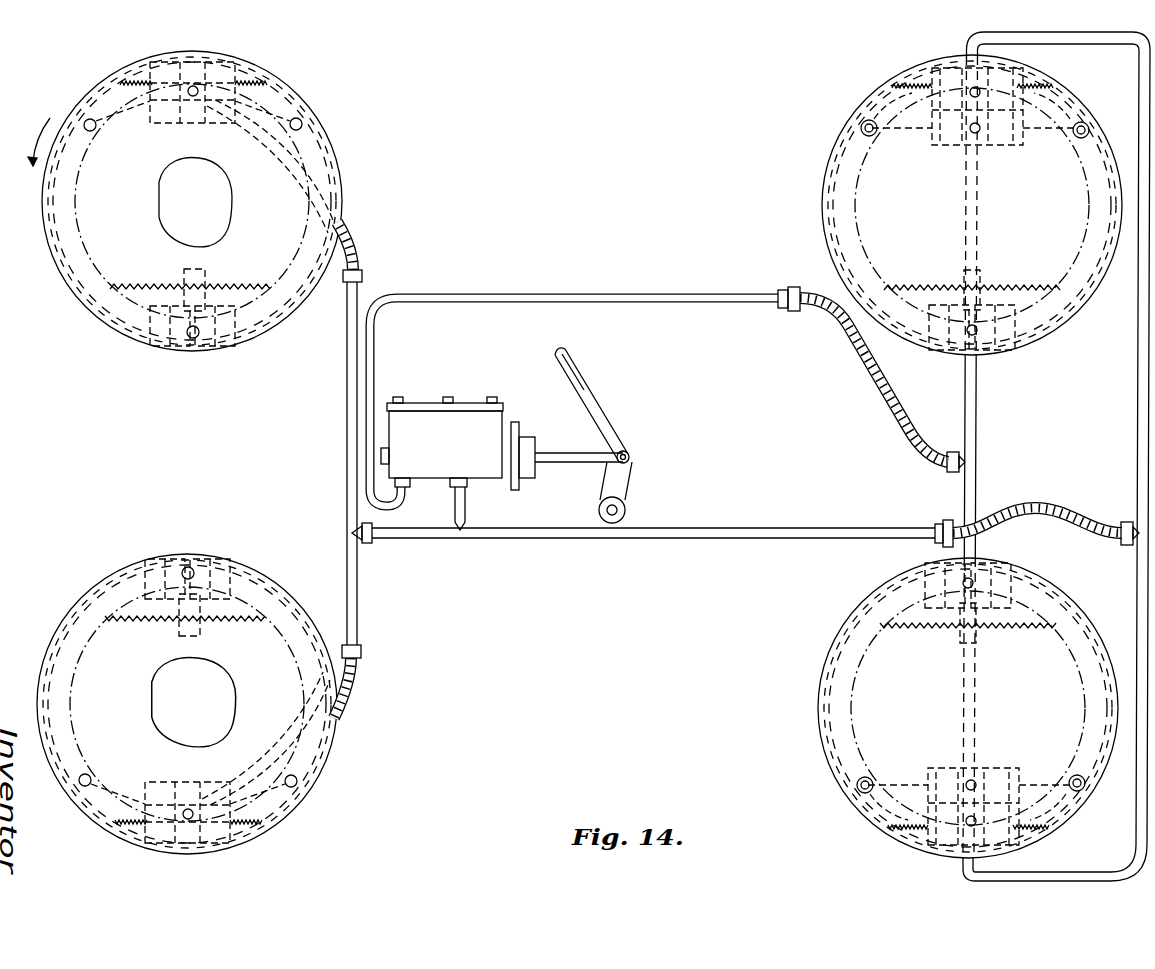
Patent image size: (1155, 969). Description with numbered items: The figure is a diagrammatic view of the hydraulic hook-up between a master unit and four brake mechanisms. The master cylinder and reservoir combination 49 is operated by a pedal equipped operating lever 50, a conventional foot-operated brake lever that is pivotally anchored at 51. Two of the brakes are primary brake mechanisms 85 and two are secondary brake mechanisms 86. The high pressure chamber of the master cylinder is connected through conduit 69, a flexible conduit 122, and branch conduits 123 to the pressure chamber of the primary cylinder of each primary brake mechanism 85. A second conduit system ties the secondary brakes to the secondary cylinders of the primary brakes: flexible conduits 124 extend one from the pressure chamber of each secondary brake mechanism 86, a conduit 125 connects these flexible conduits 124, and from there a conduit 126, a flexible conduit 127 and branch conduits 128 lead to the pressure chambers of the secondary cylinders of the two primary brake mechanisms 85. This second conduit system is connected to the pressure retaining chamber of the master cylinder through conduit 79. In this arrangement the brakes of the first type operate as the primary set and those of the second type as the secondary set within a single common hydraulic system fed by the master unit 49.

The master cylinder and reservoir combination 49 is at (488, 482).
The pedal equipped operating lever 50 is at (611, 416).
The pivotal anchor 51 is at (626, 510).
The conduit 69 is at (367, 400).
The conduit 79 is at (455, 505).
The primary brake mechanism 85 is at (831, 129).
The secondary brake mechanism 86 is at (326, 117).
The flexible conduit 122 is at (857, 372).
The branch conduits 123 is at (974, 203).
The flexible conduits 124 is at (358, 245).
The conduit 125 is at (350, 383).
The conduit 126 is at (605, 540).
The flexible conduit 127 is at (1060, 508).
The branch conduits 128 is at (1143, 310).